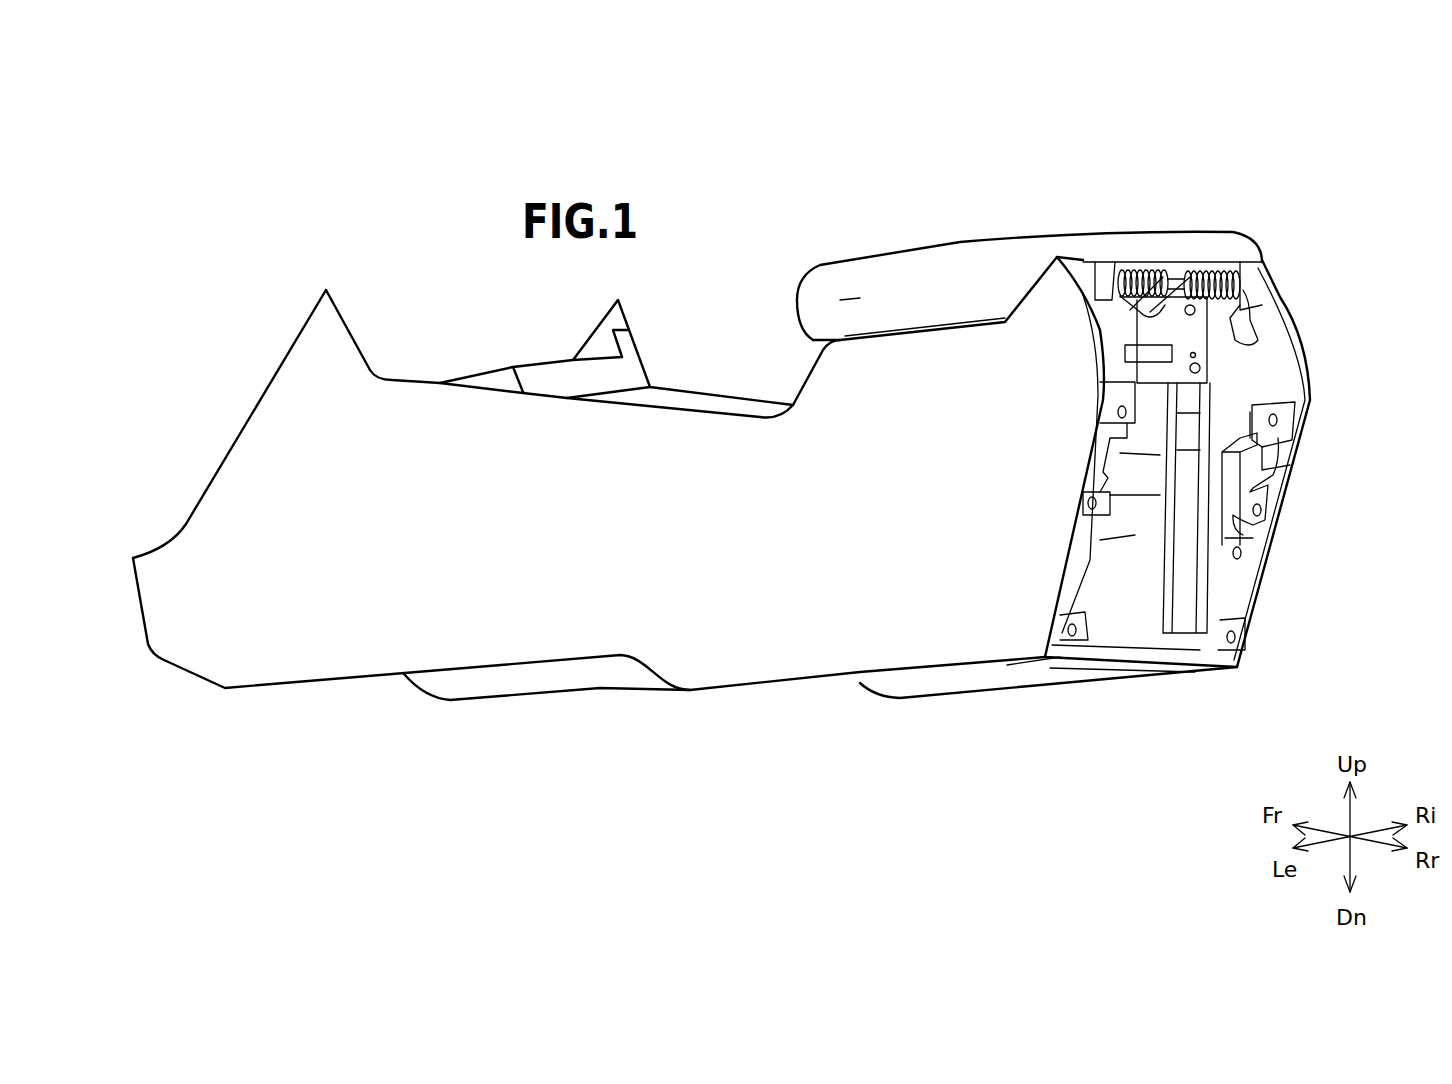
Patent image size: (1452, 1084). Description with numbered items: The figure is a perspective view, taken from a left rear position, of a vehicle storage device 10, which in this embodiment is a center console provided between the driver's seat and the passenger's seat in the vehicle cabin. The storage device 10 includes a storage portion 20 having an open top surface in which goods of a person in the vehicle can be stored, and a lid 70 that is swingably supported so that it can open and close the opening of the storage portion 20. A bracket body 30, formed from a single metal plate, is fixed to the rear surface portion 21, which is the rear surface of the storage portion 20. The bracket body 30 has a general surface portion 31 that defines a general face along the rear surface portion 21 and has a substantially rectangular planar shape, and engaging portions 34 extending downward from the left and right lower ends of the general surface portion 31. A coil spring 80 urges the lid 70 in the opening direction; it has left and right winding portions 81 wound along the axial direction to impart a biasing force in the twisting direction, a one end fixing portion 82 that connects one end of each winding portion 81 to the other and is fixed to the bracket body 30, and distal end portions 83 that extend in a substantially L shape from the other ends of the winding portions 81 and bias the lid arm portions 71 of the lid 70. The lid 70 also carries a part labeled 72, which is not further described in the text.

The vehicle storage device 10 is at (1345, 133).
The storage portion 20 is at (1131, 628).
The rear surface portion 21 is at (1128, 552).
The bracket body 30 is at (1158, 388).
The general surface portion 31 is at (1150, 337).
The engaging portion 34 is at (1280, 398).
The lid 70 is at (928, 242).
The lid arm portion 71 is at (1110, 263).
The lid body 72 is at (856, 299).
The coil spring 80 is at (1192, 245).
The winding portion 81 is at (1147, 263).
The one end fixing portion 82 is at (1143, 303).
The distal end portion 83 is at (1230, 318).